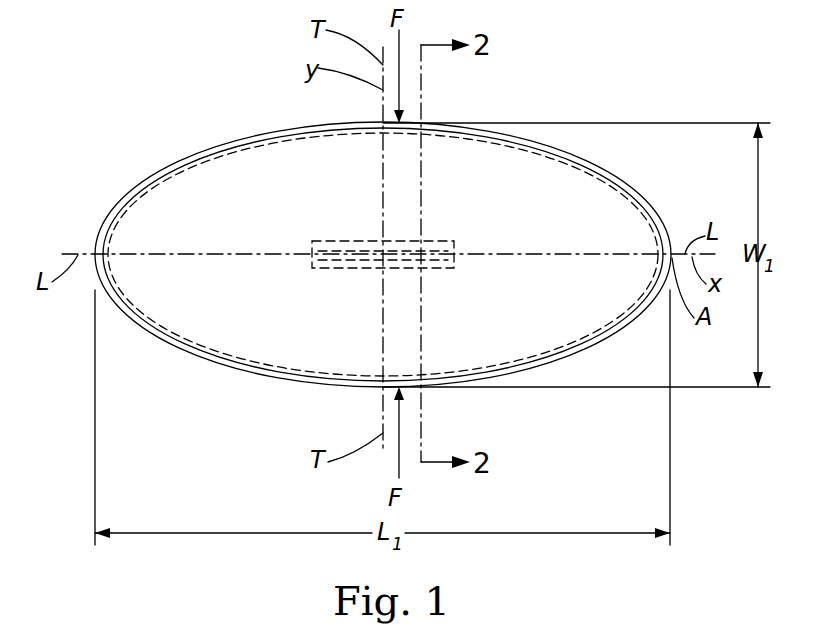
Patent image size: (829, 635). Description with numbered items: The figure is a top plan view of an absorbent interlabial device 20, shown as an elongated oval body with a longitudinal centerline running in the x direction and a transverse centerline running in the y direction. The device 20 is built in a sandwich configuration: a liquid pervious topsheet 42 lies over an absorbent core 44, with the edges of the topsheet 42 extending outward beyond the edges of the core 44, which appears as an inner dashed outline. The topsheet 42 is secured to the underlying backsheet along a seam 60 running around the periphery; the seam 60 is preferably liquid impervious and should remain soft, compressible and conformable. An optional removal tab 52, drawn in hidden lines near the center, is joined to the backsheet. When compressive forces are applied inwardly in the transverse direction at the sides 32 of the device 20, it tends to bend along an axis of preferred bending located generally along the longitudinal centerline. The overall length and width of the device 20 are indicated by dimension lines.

The absorbent interlabial device 20 is at (140, 127).
The sides 32 is at (383, 122).
The liquid pervious topsheet 42 is at (558, 178).
The absorbent core 44 is at (227, 360).
The removal tab 52 is at (443, 243).
The seam 60 is at (643, 198).